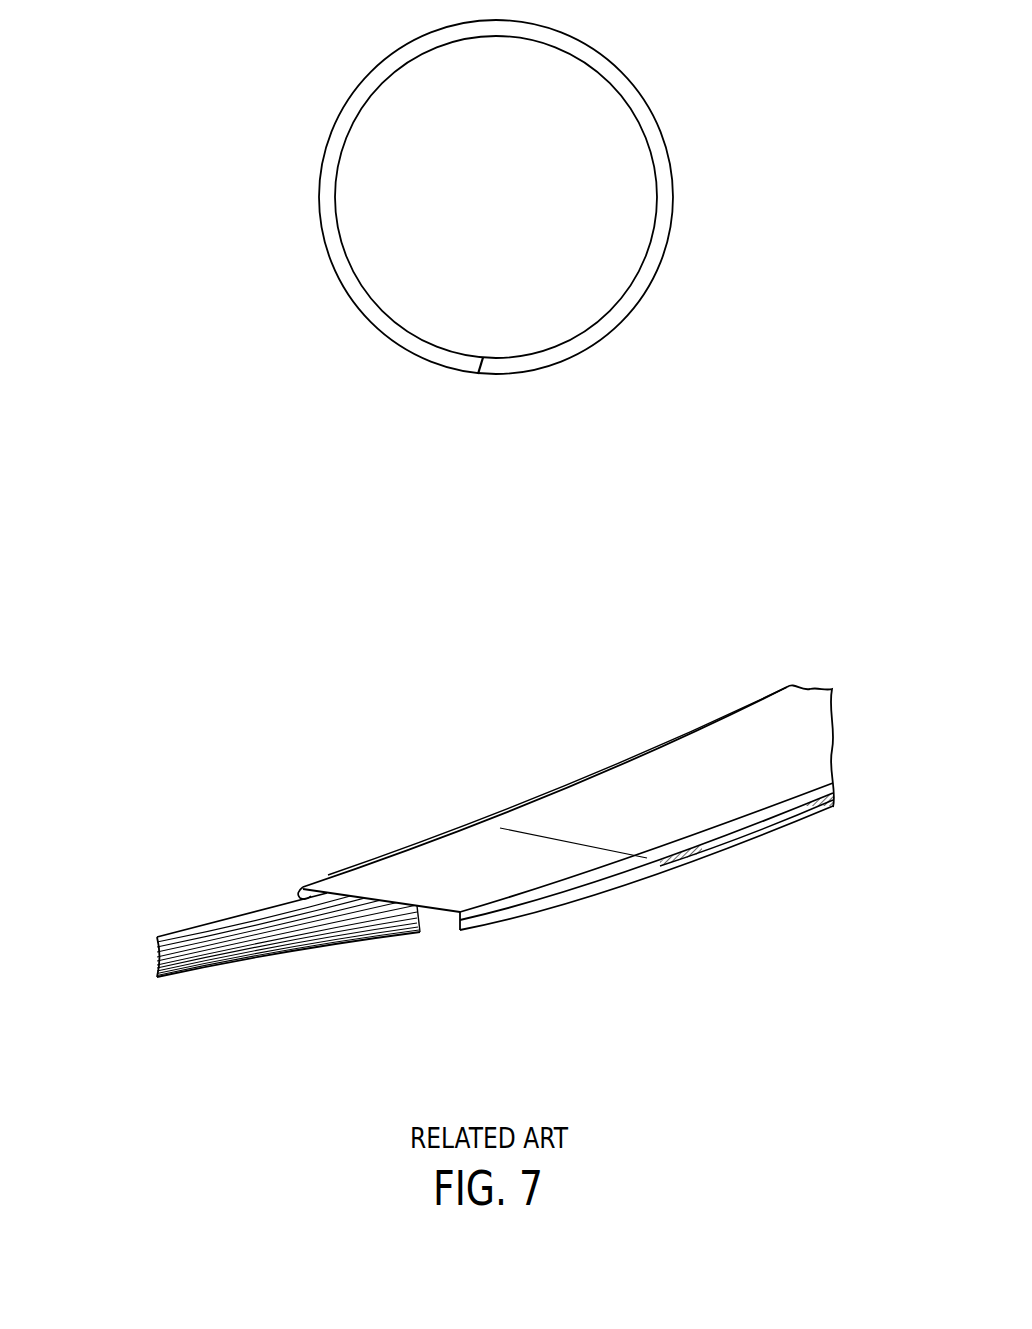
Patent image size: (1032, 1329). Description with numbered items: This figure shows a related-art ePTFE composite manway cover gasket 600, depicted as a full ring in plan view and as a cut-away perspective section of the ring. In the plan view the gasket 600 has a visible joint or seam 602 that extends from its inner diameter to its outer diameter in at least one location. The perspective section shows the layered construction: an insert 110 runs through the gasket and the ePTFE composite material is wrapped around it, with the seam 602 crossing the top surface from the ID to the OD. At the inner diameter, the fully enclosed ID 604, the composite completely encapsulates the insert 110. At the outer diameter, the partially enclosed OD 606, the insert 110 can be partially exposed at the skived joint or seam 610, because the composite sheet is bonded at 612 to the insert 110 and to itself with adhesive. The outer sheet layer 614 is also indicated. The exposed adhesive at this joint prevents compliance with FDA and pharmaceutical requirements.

The ePTFE composite manway cover gasket 600 is at (660, 96).
The joint or seam 602 is at (484, 390).
The inner diameter (ID) 604 is at (292, 879).
The outer diameter (OD) 606 is at (496, 924).
The joint or seam 610 is at (697, 871).
The bond location 612 is at (422, 940).
The outer ePTFE sheet layer 614 is at (836, 786).
The insert 110 is at (142, 960).